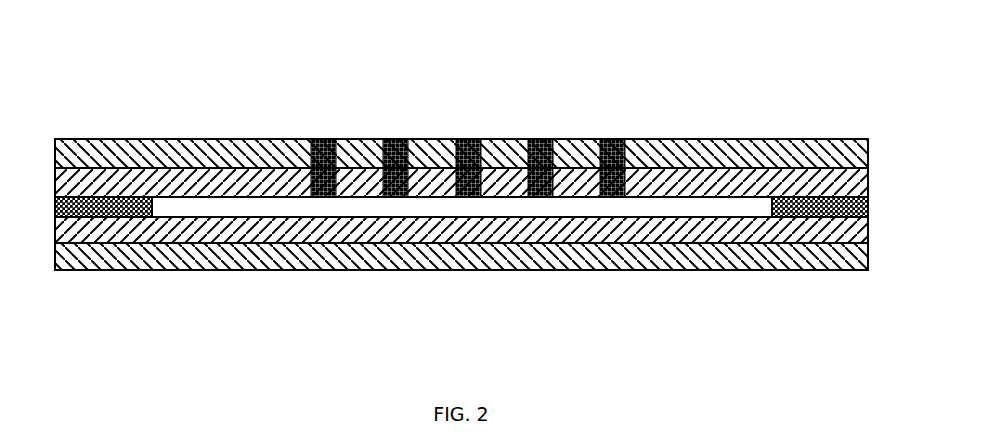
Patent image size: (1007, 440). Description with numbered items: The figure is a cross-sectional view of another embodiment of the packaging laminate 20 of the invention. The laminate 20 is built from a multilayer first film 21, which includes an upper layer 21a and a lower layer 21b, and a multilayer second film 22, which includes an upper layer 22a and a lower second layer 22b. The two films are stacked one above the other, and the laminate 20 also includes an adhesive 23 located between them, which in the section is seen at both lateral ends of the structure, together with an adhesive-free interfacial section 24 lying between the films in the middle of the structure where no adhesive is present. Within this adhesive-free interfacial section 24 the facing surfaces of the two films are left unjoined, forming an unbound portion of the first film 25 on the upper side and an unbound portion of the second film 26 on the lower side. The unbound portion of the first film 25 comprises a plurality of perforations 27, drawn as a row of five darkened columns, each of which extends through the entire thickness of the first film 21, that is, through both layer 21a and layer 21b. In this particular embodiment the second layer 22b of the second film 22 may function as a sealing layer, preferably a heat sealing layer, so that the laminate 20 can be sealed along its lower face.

The laminate 20 is at (387, 73).
The first film 21 is at (461, 122).
The layer 21a is at (263, 138).
The layer 21b is at (222, 188).
The second film 22 is at (461, 277).
The layer 22a is at (760, 225).
The second layer 22b is at (684, 250).
The adhesive 23 is at (98, 205).
The adhesive-free interfacial section 24 is at (322, 206).
The unbound portion of the first film 25 is at (660, 188).
The unbound portion of the second film 26 is at (443, 218).
The perforations 27 is at (600, 139).